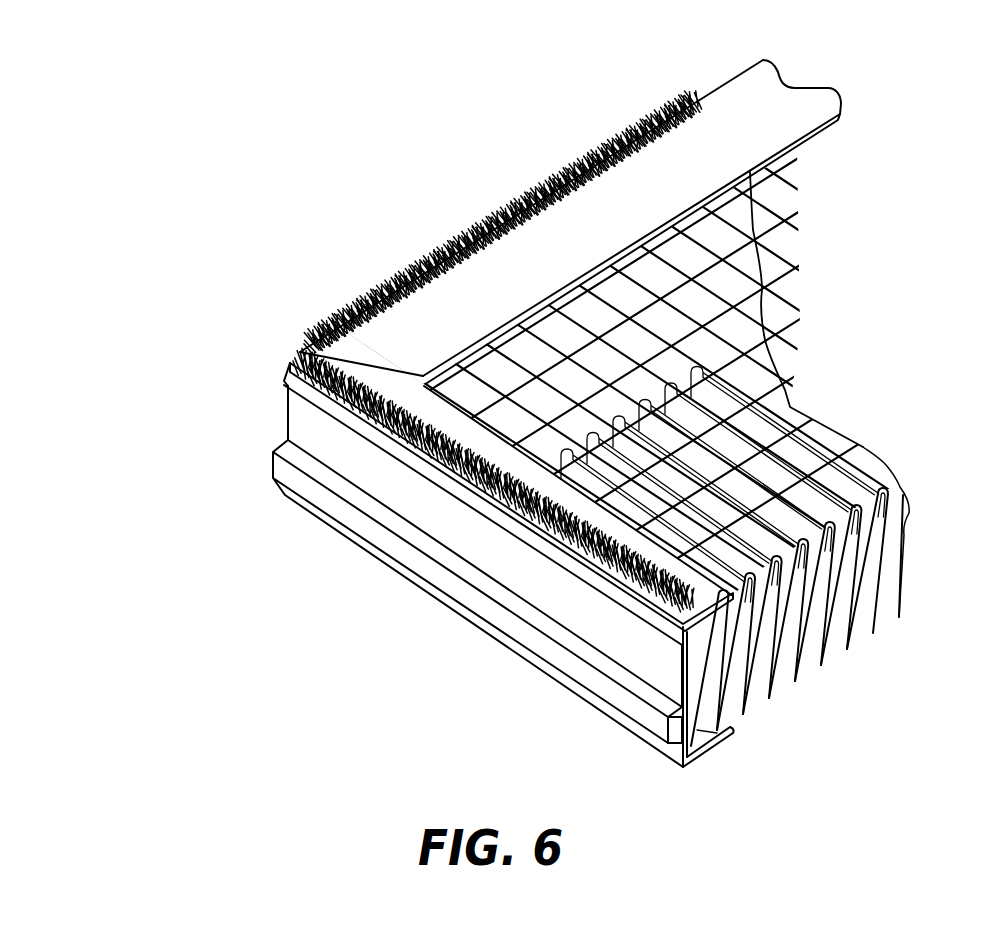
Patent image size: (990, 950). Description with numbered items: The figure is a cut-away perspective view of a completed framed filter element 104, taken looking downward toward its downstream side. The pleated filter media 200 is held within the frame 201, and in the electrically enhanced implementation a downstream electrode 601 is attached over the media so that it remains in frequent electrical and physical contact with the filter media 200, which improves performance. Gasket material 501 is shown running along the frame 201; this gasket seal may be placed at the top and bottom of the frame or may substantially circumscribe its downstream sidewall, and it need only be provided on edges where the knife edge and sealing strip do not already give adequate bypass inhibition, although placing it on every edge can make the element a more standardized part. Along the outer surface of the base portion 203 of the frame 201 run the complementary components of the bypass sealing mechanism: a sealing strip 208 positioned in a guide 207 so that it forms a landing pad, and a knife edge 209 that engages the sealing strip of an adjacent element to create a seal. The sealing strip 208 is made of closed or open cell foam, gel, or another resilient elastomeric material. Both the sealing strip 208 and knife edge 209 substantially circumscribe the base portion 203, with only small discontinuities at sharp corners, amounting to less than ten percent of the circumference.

The filter element 104 is at (432, 135).
The filter media 200 is at (898, 487).
The frame 201 is at (777, 97).
The base portion 203 is at (725, 740).
The guide 207 is at (285, 442).
The sealing strip 208 is at (333, 512).
The knife edge 209 is at (283, 382).
The gasket material 501 is at (518, 200).
The downstream electrode 601 is at (785, 263).